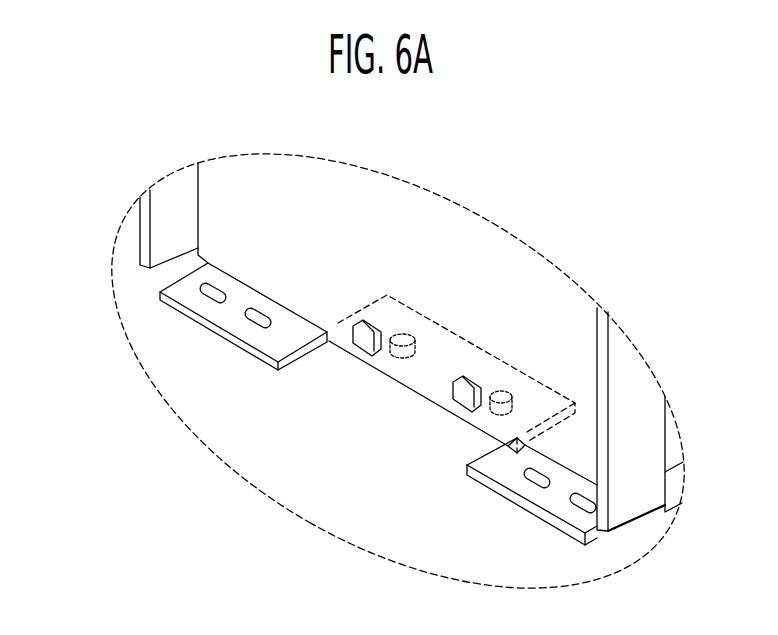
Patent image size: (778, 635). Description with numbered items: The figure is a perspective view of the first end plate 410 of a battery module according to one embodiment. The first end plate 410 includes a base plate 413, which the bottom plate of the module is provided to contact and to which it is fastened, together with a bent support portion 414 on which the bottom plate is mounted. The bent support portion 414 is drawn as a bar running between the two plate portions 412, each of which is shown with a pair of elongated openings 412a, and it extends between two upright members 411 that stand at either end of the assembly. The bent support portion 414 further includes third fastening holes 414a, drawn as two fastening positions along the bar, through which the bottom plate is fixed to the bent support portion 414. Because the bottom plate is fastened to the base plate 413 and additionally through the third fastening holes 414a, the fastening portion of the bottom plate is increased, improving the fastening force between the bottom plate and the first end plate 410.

The first end plate 410 is at (351, 226).
The vertical frame member 411 is at (164, 212).
The fixing plate 412 is at (379, 421).
The fastening slot 412a is at (248, 312).
The base plate 413 is at (248, 248).
The bent support portion 414 is at (452, 343).
The third fastening holes 414a is at (500, 390).